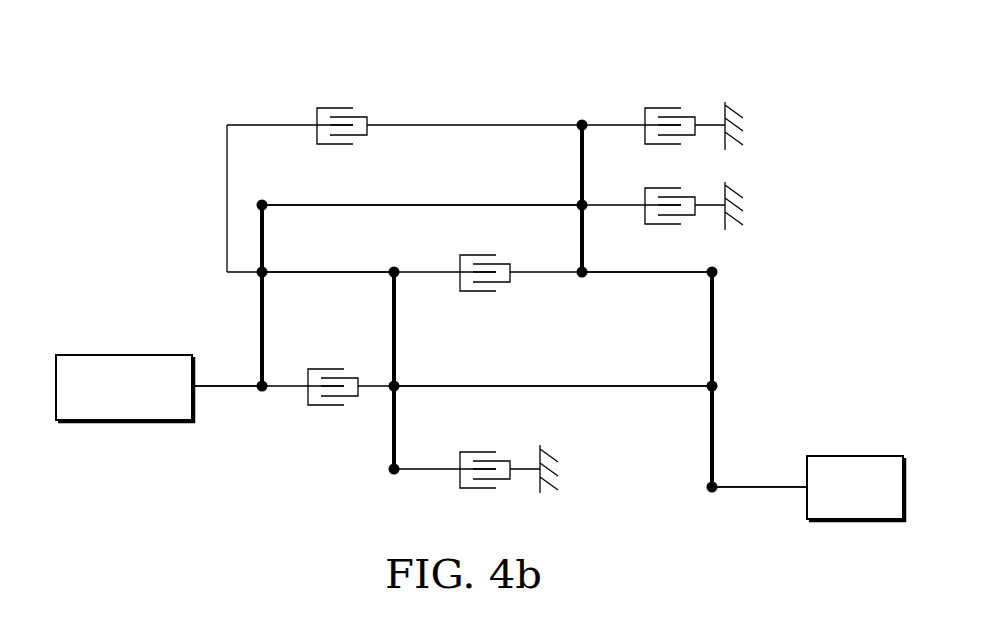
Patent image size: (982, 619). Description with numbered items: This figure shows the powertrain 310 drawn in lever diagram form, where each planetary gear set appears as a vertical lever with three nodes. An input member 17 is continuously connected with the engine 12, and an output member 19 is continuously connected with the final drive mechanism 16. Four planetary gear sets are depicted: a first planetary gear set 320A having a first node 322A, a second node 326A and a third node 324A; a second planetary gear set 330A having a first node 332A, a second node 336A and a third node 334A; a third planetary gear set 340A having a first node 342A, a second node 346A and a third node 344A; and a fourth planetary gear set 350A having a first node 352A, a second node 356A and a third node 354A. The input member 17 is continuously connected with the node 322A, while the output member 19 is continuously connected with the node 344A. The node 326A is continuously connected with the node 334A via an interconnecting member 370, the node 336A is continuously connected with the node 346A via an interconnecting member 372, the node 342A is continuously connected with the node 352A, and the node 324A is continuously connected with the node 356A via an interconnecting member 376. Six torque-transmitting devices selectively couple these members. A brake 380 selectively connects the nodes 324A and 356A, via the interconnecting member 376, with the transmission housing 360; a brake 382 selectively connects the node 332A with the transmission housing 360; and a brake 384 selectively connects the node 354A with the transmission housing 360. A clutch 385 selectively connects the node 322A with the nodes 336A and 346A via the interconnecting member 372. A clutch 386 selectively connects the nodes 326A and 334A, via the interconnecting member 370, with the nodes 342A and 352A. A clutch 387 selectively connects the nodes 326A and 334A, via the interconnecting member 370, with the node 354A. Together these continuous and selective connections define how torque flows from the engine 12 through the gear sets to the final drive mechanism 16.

The powertrain 310 is at (489, 72).
The engine 12 is at (115, 340).
The final drive mechanism 16 is at (853, 448).
The input member 17 is at (211, 384).
The output member 19 is at (766, 491).
The first planetary gear set 320A is at (264, 195).
The first node 322A is at (267, 392).
The third node 324A is at (267, 212).
The second node 326A is at (267, 266).
The second planetary gear set 330A is at (396, 262).
The first node 332A is at (390, 474).
The third node 334A is at (398, 279).
The second node 336A is at (398, 384).
The third planetary gear set 340A is at (716, 262).
The first node 342A is at (718, 277).
The third node 344A is at (707, 491).
The second node 346A is at (718, 384).
The fourth planetary gear set 350A is at (583, 105).
The first node 352A is at (578, 280).
The third node 354A is at (578, 130).
The second node 356A is at (578, 200).
The transmission housing 360 is at (743, 146).
The interconnecting member 370 is at (307, 275).
The interconnecting member 372 is at (647, 277).
The interconnecting member 376 is at (402, 203).
The brake 380 is at (710, 172).
The brake 382 is at (525, 434).
The brake 384 is at (710, 92).
The clutch 385 is at (353, 371).
The clutch 386 is at (525, 236).
The clutch 387 is at (368, 110).